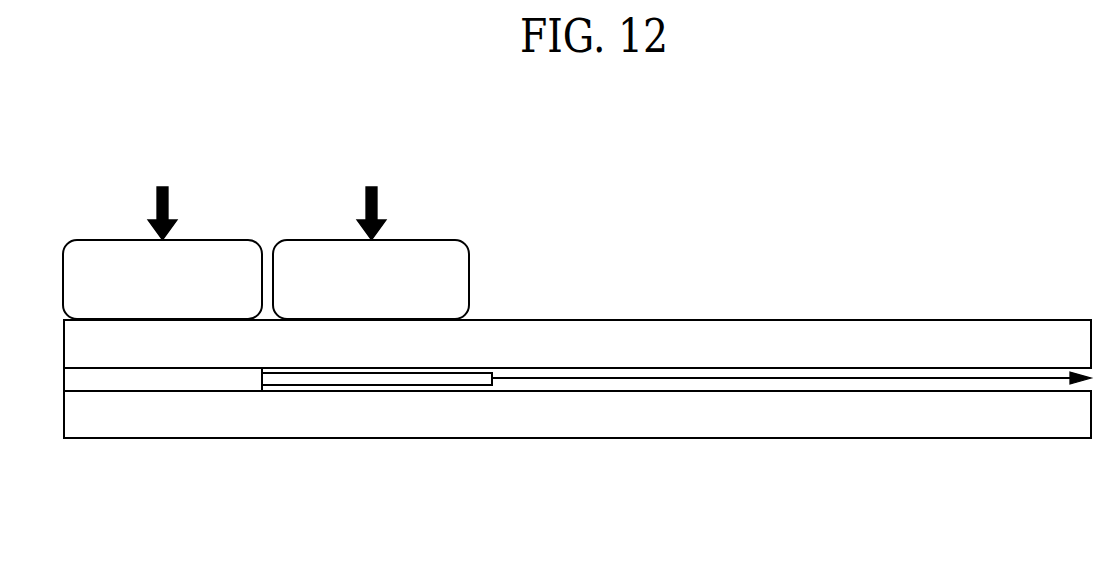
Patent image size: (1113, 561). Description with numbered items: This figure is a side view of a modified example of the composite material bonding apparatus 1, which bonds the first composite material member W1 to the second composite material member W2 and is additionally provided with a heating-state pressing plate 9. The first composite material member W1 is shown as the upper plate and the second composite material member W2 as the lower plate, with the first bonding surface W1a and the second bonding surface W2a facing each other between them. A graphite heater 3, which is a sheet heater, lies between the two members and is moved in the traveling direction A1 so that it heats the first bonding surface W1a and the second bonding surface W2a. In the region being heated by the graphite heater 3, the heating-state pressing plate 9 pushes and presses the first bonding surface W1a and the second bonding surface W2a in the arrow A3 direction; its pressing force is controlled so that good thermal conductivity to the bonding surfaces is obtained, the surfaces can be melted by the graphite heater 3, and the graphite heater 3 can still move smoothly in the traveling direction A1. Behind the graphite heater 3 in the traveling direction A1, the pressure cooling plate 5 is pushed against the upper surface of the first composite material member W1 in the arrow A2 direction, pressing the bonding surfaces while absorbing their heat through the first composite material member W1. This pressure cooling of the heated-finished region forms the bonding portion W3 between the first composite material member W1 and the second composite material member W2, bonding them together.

The composite material bonding apparatus 1 is at (501, 208).
The graphite heater 3 is at (371, 385).
The pressure cooling plate 5 is at (108, 240).
The heating-state pressing plate 9 is at (330, 240).
The first composite material member W1 is at (820, 320).
The first bonding surface W1a is at (580, 368).
The second composite material member W2 is at (859, 438).
The second bonding surface W2a is at (632, 390).
The bonding portion W3 is at (167, 381).
The traveling direction A1 is at (973, 378).
The arrow A2 direction A2 is at (168, 197).
The arrow A3 direction A3 is at (377, 197).